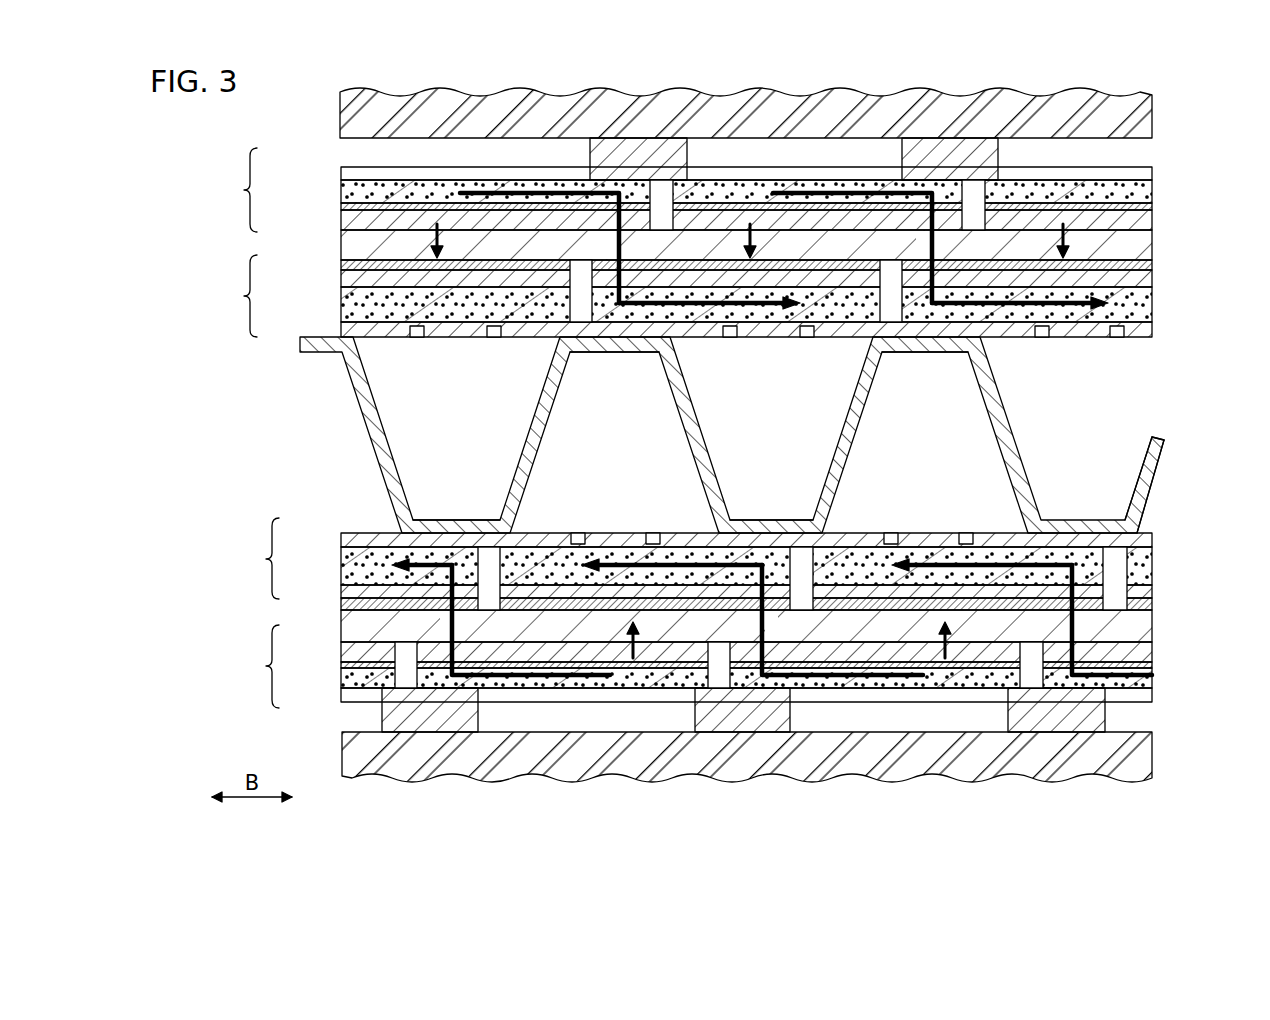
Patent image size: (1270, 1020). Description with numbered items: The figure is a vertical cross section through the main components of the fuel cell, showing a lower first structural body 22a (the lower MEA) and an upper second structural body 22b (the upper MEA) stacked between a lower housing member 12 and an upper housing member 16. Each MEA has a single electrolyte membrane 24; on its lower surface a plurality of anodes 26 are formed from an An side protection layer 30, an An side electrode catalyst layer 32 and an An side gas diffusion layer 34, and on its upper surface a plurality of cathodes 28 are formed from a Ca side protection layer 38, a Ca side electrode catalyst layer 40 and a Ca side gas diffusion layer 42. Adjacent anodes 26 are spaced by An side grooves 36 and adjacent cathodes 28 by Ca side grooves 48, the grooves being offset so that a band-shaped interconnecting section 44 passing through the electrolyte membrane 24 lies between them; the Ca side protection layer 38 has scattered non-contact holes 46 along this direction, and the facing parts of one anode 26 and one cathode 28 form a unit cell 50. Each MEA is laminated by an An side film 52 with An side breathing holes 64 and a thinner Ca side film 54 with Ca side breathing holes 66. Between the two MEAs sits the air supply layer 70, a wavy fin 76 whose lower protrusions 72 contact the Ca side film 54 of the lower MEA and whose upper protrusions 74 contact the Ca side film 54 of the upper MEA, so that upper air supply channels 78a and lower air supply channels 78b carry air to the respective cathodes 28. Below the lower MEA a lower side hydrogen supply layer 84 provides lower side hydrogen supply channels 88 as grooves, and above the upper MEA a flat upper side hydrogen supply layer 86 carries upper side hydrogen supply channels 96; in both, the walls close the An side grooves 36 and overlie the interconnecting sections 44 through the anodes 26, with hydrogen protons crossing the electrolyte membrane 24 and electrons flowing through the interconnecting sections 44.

The lower housing member 12 is at (1120, 762).
The upper housing member 16 is at (1105, 100).
The first structural body 22a is at (1160, 607).
The second structural body 22b is at (1160, 252).
The electrolyte membrane 24 is at (341, 243).
The anode 26 is at (248, 428).
The cathode 28 is at (248, 427).
The An side protection layer 30 is at (341, 222).
The An side electrode catalyst layer 32 is at (341, 201).
The An side gas diffusion layer 34 is at (341, 182).
The An side groove 36 is at (664, 195).
The Ca side protection layer 38 is at (341, 266).
The Ca side electrode catalyst layer 40 is at (341, 296).
The Ca side gas diffusion layer 42 is at (341, 318).
The interconnecting section 44 is at (598, 242).
The non-contact hole 46 is at (628, 292).
The Ca side groove 48 is at (581, 339).
The unit cell 50 is at (318, 142).
The An side film 52 is at (1153, 167).
The Ca side film 54 is at (1140, 340).
The An side breathing hole 64 is at (530, 185).
The Ca side breathing hole 66 is at (417, 340).
The air supply layer 70 is at (1170, 432).
The lower protrusion 72 is at (440, 520).
The upper protrusion 74 is at (628, 345).
The fin 76 is at (1160, 460).
The upper air supply channel 78a is at (595, 435).
The lower air supply channel 78b is at (845, 448).
The lower side hydrogen supply layer 84 is at (745, 712).
The upper side hydrogen supply layer 86 is at (688, 160).
The lower side hydrogen supply channel 88 is at (606, 726).
The upper side hydrogen supply channel 96 is at (748, 140).